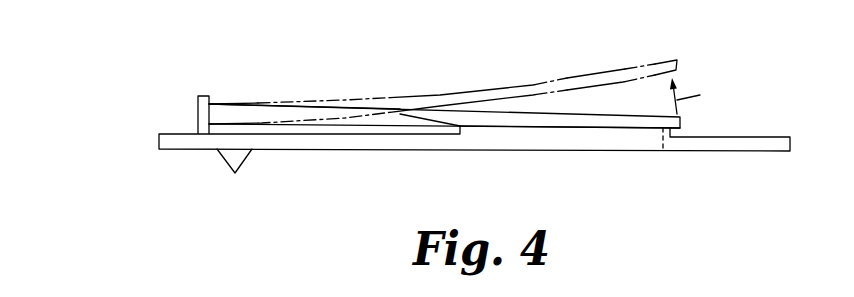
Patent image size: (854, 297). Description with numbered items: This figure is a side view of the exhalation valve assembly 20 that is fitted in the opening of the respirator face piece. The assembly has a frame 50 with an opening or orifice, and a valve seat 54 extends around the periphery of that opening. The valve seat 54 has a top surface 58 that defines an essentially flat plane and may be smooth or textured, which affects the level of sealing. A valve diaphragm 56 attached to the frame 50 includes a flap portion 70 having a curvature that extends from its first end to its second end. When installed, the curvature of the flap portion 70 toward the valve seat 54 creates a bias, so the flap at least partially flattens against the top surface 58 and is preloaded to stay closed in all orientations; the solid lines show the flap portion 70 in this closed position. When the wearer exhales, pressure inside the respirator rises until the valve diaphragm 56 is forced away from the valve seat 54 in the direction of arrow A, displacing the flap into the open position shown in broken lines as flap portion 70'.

The exhalation valve assembly 20 is at (429, 106).
The frame 50 is at (182, 140).
The valve seat 54 is at (468, 133).
The valve diaphragm 56 is at (243, 100).
The top surface 58 is at (465, 128).
The flap portion 70 is at (444, 158).
The flap portion in displaced position 70' is at (443, 62).
The arrow A is at (695, 96).